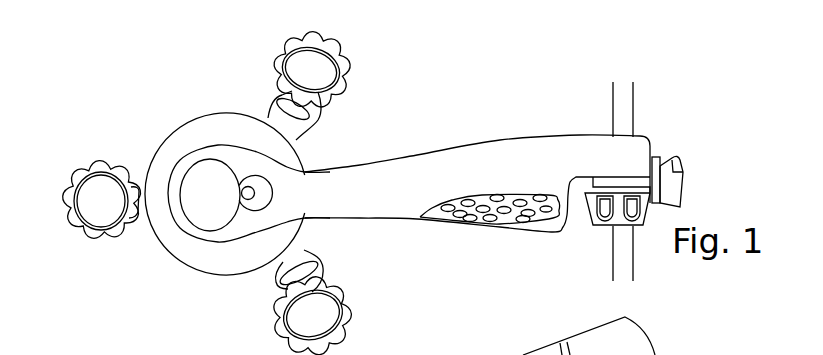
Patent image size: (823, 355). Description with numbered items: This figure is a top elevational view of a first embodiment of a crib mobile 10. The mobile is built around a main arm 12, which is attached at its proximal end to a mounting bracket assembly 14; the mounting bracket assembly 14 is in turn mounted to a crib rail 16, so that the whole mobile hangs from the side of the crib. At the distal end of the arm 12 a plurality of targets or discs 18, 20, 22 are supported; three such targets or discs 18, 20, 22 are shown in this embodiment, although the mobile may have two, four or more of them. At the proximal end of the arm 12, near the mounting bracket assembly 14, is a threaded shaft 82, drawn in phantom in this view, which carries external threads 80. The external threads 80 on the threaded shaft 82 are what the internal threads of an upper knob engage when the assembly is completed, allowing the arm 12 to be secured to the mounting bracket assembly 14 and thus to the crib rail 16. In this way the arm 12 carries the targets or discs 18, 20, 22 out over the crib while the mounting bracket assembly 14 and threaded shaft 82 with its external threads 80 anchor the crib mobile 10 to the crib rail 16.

The crib mobile 10 is at (470, 114).
The main arm 12 is at (530, 153).
The mounting bracket assembly 14 is at (716, 183).
The crib rail 16 is at (633, 107).
The target or disc 18 is at (335, 50).
The target or disc 20 is at (70, 207).
The target or disc 22 is at (350, 297).
The external threads 80 is at (592, 184).
The threaded shaft 82 is at (653, 152).